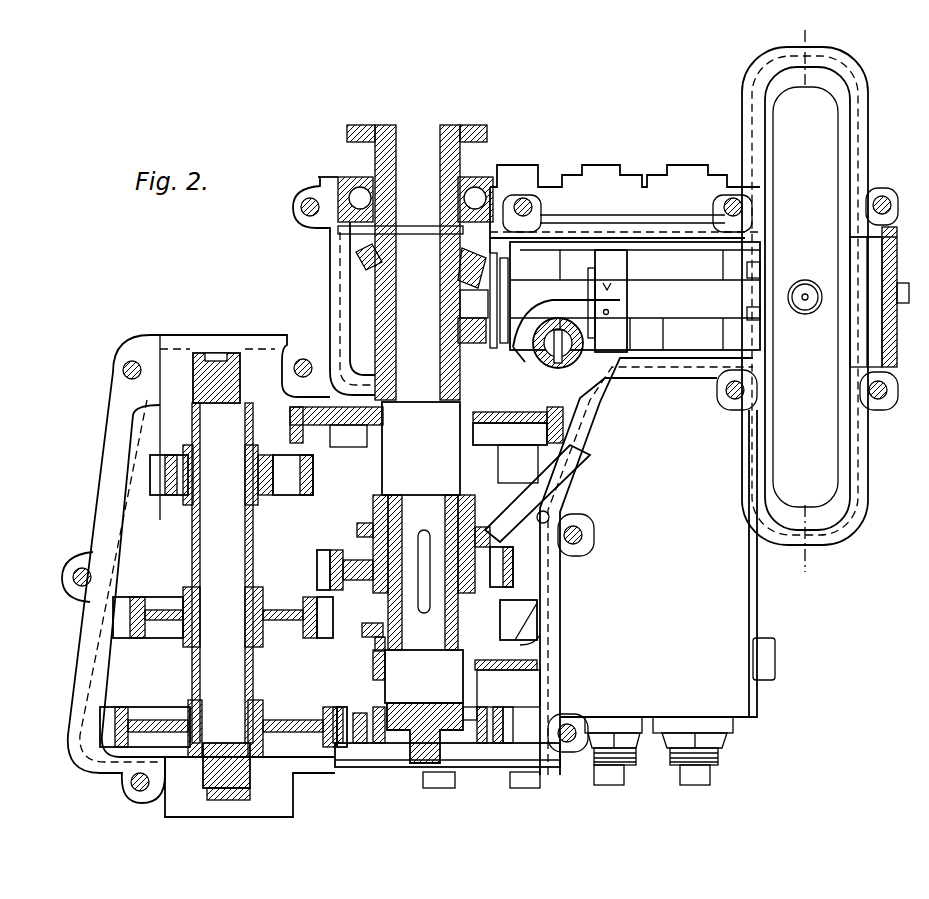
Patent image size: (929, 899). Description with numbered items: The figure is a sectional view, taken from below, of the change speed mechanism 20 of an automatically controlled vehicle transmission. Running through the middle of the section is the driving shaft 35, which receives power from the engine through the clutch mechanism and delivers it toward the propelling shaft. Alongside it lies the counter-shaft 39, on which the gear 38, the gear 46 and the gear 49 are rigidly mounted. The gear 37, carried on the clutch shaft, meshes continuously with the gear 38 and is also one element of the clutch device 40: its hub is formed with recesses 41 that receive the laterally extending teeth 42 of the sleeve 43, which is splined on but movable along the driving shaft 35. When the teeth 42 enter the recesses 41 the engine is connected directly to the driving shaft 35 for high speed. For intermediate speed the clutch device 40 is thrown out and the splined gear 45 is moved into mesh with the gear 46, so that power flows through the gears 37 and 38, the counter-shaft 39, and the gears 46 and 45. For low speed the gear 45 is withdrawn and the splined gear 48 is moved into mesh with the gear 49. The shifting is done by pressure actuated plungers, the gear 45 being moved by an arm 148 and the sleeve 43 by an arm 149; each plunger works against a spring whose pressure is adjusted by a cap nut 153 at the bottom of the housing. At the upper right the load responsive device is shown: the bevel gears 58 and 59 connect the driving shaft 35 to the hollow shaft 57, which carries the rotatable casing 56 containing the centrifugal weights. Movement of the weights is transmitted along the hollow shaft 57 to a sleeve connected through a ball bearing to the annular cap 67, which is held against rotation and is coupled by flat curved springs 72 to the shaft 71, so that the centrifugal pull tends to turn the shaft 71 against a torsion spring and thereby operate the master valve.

The change speed mechanism 20 is at (147, 537).
The driving shaft 35 is at (392, 335).
The gear 37 is at (524, 690).
The gear 38 is at (293, 713).
The counter-shaft 39 is at (222, 601).
The clutch device 40 is at (358, 710).
The recesses 41 is at (468, 713).
The teeth 42 is at (375, 661).
The sleeve 43 is at (382, 627).
The gear 45 is at (337, 547).
The gear 46 is at (273, 610).
The gear 48 is at (270, 398).
The gear 49 is at (172, 453).
The rotatable casing 56 is at (805, 308).
The hollow shaft 57 is at (635, 296).
The bevel gear 58 is at (375, 253).
The bevel gear 59 is at (470, 322).
The annular cap 67 is at (607, 344).
The shaft 71 is at (572, 350).
The flat curved springs 72 is at (550, 305).
The arm 148 is at (525, 495).
The arm 149 is at (533, 627).
The cap nut 153 is at (510, 780).